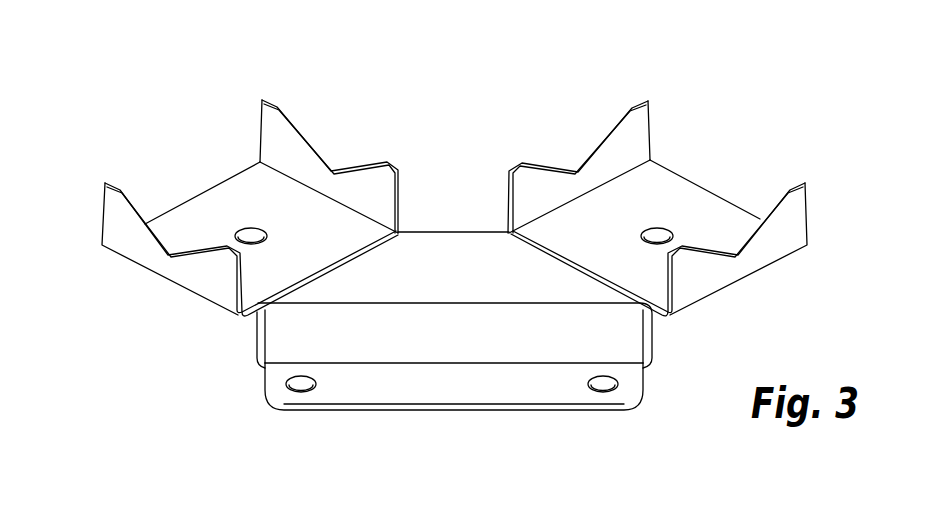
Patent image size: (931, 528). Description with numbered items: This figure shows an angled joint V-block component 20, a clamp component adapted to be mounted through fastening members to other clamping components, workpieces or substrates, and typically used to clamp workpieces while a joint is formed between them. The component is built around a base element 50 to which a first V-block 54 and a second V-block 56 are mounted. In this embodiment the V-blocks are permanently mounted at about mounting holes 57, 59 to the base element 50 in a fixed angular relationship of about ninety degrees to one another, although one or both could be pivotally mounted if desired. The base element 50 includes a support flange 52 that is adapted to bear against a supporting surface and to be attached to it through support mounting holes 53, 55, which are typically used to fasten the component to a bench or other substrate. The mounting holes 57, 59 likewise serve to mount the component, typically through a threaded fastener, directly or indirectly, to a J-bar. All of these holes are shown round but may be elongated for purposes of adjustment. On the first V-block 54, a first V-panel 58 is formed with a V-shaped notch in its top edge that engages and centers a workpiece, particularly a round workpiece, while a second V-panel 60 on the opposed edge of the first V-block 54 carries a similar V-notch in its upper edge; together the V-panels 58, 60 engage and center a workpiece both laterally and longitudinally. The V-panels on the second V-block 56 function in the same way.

The angled joint V-block component 20 is at (464, 190).
The base element 50 is at (458, 287).
The support flange 52 is at (472, 385).
The support mounting hole 53 is at (303, 387).
The first V-block 54 is at (718, 217).
The support mounting hole 55 is at (605, 385).
The second V-block 56 is at (215, 205).
The mounting hole 57 is at (658, 231).
The first V-panel 58 is at (578, 172).
The mounting hole 59 is at (240, 228).
The second V-panel 60 is at (760, 268).